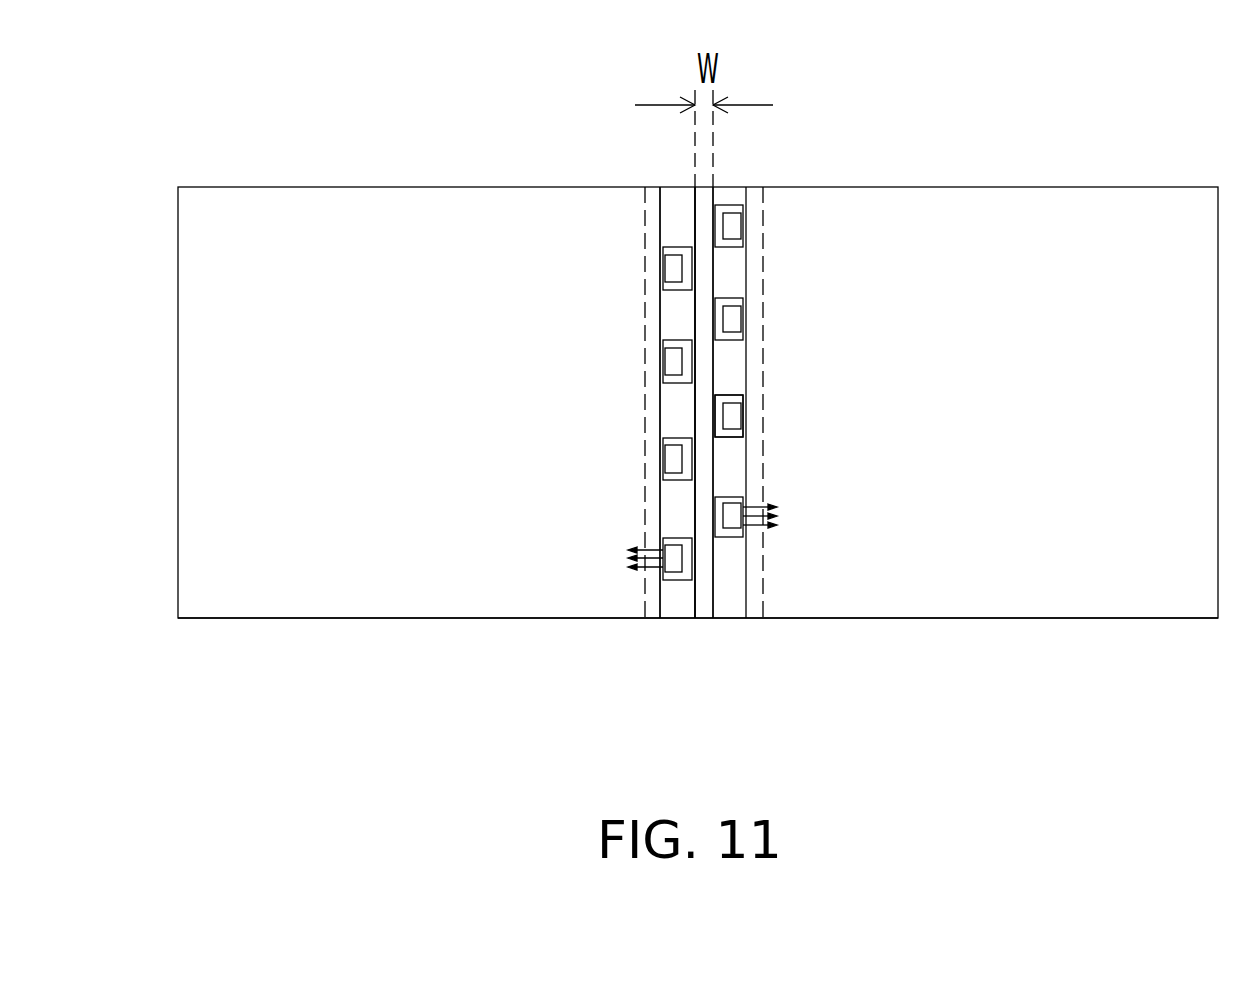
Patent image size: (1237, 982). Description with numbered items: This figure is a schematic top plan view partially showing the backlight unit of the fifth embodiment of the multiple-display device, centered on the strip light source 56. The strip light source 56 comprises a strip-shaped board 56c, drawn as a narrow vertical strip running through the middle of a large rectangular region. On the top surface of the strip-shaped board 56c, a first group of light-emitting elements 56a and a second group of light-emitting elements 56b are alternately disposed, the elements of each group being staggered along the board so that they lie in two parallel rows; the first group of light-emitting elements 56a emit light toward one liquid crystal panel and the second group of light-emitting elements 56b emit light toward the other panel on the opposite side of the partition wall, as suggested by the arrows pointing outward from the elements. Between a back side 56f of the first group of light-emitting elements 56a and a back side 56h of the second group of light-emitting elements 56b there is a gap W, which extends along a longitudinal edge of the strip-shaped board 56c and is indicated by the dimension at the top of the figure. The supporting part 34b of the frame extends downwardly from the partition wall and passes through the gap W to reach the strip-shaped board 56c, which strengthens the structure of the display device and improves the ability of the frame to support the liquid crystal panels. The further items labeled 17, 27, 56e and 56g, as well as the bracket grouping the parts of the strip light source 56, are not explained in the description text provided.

The substrate 17 is at (287, 605).
The dielectric layer 27 is at (1169, 603).
The supporting part 34b is at (705, 268).
The strip light source 56 is at (1102, 707).
The first group of light-emitting elements 56a is at (720, 402).
The second group of light-emitting elements 56b is at (672, 476).
The strip-shaped board 56c is at (673, 603).
The electrode pad 56e is at (743, 415).
The back side of the first group of light-emitting elements 56f is at (715, 432).
The electrode pad 56g is at (663, 563).
The back side of the second group of light-emitting elements 56h is at (692, 543).